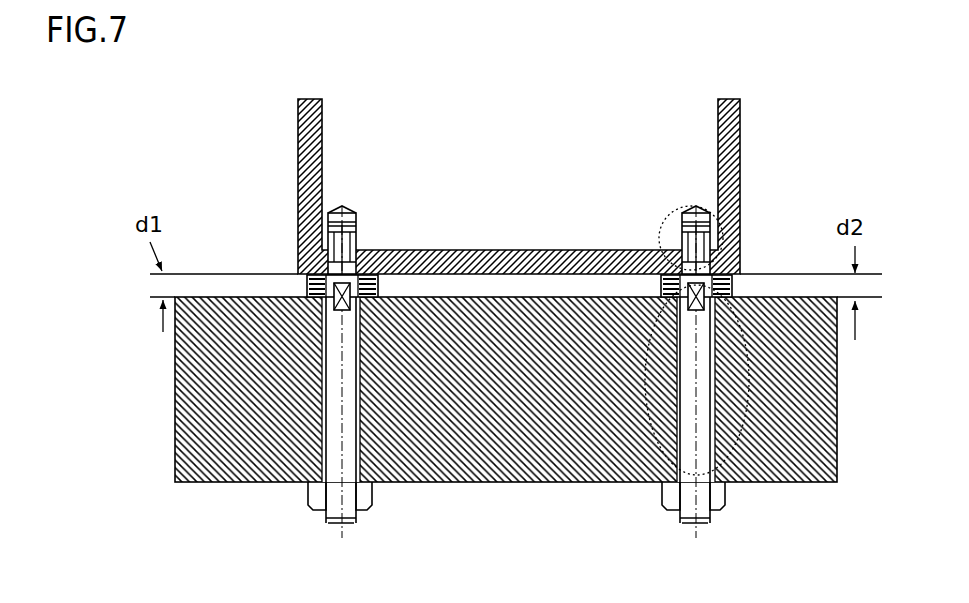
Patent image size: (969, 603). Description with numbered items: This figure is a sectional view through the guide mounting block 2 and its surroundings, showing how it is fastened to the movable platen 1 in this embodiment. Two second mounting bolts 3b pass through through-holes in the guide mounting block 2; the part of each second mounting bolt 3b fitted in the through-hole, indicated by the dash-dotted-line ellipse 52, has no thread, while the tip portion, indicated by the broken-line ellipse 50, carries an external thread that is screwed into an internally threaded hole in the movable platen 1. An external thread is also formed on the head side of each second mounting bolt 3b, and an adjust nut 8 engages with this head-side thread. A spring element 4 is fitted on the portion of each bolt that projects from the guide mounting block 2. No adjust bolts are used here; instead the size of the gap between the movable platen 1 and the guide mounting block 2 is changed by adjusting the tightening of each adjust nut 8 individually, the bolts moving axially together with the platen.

The movable platen 1 is at (352, 143).
The guide mounting block 2 is at (220, 388).
The second mounting bolt 3b is at (355, 522).
The spring element 4 is at (300, 270).
The adjust nut 8 is at (311, 508).
The broken-line ellipse 50 is at (738, 168).
The dash-dotted-line ellipse 52 is at (648, 428).